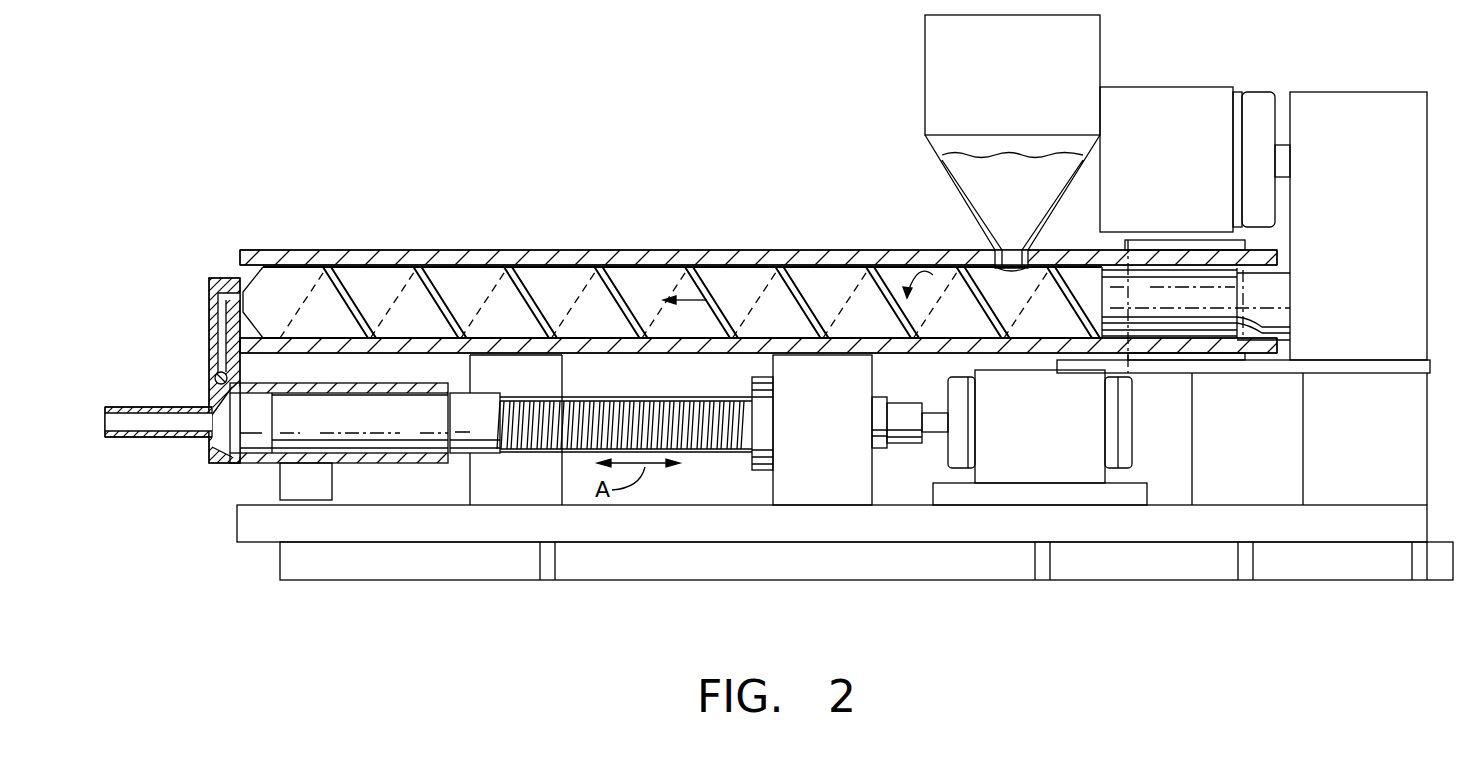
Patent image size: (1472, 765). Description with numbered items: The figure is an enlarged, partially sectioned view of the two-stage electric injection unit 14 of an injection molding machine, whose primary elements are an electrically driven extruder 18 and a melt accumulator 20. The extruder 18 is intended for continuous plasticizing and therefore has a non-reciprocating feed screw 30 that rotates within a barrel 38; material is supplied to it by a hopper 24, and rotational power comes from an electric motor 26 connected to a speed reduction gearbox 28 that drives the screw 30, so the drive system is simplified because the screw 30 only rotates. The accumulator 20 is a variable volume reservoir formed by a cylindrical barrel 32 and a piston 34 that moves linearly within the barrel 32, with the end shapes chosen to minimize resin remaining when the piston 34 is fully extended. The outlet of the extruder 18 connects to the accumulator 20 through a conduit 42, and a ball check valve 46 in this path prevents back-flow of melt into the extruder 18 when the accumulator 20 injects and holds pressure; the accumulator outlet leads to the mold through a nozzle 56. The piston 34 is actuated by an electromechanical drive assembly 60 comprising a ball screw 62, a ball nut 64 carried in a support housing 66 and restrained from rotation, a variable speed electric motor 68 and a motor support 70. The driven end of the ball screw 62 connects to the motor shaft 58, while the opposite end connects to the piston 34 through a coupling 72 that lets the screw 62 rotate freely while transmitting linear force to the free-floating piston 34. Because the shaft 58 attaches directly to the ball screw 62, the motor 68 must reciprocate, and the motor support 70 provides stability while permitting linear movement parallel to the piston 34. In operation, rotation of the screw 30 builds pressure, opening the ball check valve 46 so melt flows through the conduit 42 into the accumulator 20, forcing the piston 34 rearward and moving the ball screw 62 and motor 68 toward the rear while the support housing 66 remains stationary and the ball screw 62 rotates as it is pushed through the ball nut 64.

The two-stage electric injection unit 14 is at (372, 78).
The electrically driven extruder 18 is at (790, 226).
The melt accumulator 20 is at (222, 482).
The hopper 24 is at (1015, 84).
The electric motor 26 is at (1175, 168).
The speed reduction gearbox 28 is at (1373, 226).
The feed screw 30 is at (473, 275).
The cylindrical barrel 32 is at (418, 463).
The piston 34 is at (379, 421).
The barrel 38 is at (365, 250).
The conduit 42 is at (222, 280).
The ball check valve 46 is at (214, 376).
The nozzle 56 is at (172, 430).
The motor shaft 58 is at (937, 428).
The electromechanical drive assembly 60 is at (892, 525).
The ball screw 62 is at (612, 408).
The ball nut 64 is at (775, 410).
The support housing 66 is at (840, 463).
The variable speed electric motor 68 is at (1053, 420).
The motor support 70 is at (1003, 493).
The coupling 72 is at (478, 435).